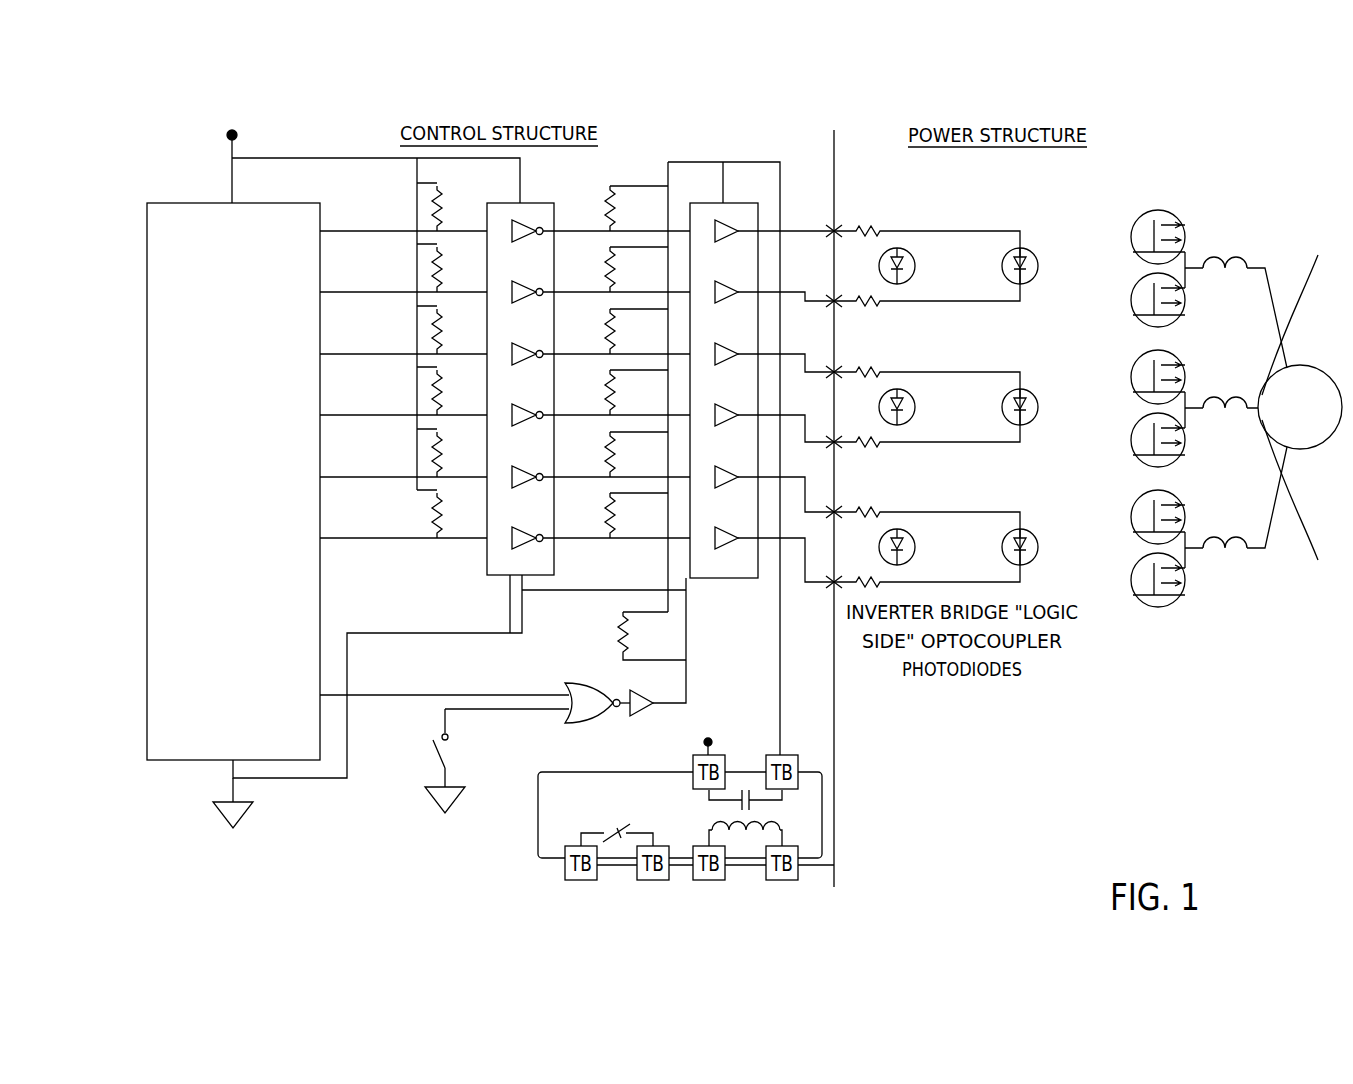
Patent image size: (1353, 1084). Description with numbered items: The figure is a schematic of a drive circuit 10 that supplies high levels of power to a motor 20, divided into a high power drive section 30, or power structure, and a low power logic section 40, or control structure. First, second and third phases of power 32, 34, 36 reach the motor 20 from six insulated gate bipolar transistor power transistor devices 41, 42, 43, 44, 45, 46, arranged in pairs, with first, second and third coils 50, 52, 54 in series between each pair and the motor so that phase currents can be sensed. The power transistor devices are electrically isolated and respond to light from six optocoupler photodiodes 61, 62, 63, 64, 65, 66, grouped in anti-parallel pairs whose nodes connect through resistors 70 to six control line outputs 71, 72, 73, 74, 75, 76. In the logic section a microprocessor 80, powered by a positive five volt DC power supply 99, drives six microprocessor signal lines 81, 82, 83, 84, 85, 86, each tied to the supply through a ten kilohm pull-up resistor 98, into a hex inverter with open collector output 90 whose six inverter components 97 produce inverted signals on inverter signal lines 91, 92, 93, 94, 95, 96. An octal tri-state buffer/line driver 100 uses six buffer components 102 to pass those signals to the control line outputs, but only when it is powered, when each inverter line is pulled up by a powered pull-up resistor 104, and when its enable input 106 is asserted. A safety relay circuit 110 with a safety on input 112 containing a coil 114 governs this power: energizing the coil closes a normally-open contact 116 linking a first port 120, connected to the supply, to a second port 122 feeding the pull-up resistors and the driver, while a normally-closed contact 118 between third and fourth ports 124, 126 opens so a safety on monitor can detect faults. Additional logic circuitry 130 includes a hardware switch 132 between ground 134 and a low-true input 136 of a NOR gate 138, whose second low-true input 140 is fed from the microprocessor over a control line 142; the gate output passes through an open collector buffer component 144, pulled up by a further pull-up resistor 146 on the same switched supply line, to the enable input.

The drive circuit 10 is at (1207, 150).
The motor 20 is at (1326, 338).
The high power drive section 30 is at (1030, 740).
The first phase of power 32 is at (1268, 283).
The second phase of power 34 is at (1242, 410).
The third phase of power 36 is at (1268, 550).
The low power logic section 40 is at (800, 110).
The power transistor device 41 is at (1159, 211).
The power transistor device 42 is at (1176, 326).
The power transistor device 43 is at (1152, 352).
The power transistor device 44 is at (1138, 458).
The power transistor device 45 is at (1172, 492).
The power transistor device 46 is at (1163, 606).
The first coil 50 is at (1240, 249).
The second coil 52 is at (1210, 395).
The third coil 54 is at (1233, 535).
The optocoupler photodiode 61 is at (903, 249).
The optocoupler photodiode 62 is at (1008, 249).
The optocoupler photodiode 63 is at (908, 391).
The optocoupler photodiode 64 is at (1006, 391).
The optocoupler photodiode 65 is at (908, 531).
The optocoupler photodiode 66 is at (1006, 531).
The resistor 70 is at (872, 230).
The control line output 71 is at (859, 230).
The control line output 72 is at (862, 300).
The control line output 73 is at (860, 371).
The control line output 74 is at (862, 441).
The control line output 75 is at (860, 511).
The control line output 76 is at (859, 581).
The microprocessor 80 is at (147, 330).
The microprocessor signal line 81 is at (330, 227).
The microprocessor signal line 82 is at (330, 288).
The microprocessor signal line 83 is at (330, 350).
The microprocessor signal line 84 is at (330, 411).
The microprocessor signal line 85 is at (330, 473).
The microprocessor signal line 86 is at (330, 534).
The hex inverter with open collector output 90 is at (511, 636).
The inverter signal line 91 is at (557, 229).
The inverter signal line 92 is at (557, 290).
The inverter signal line 93 is at (557, 352).
The inverter signal line 94 is at (557, 413).
The inverter signal line 95 is at (557, 475).
The inverter signal line 96 is at (557, 536).
The inverter component 97 is at (524, 582).
The pull-up resistor 98 is at (445, 194).
The power supply 99 is at (252, 128).
The octal tri-state buffer/line driver 100 is at (745, 579).
The buffer component 102 is at (724, 238).
The pull-up resistor 104 is at (607, 196).
The enable input 106 is at (668, 550).
The safety relay circuit 110 is at (536, 843).
The safety on input 112 is at (816, 868).
The coil 114 is at (762, 812).
The normally-open contact 116 is at (690, 800).
The normally-closed contact 118 is at (568, 842).
The first port 120 is at (733, 752).
The second port 122 is at (806, 760).
The third port 124 is at (547, 868).
The fourth port 126 is at (660, 893).
The additional logic circuitry 130 is at (414, 850).
The hardware switch 132 is at (412, 752).
The ground 134 is at (230, 813).
The low-true input 136 is at (563, 716).
The NOR gate 138 is at (590, 662).
The second low-true input 140 is at (573, 683).
The control line 142 is at (408, 695).
The buffer component 144 is at (640, 717).
The further pull-up resistor 146 is at (608, 589).